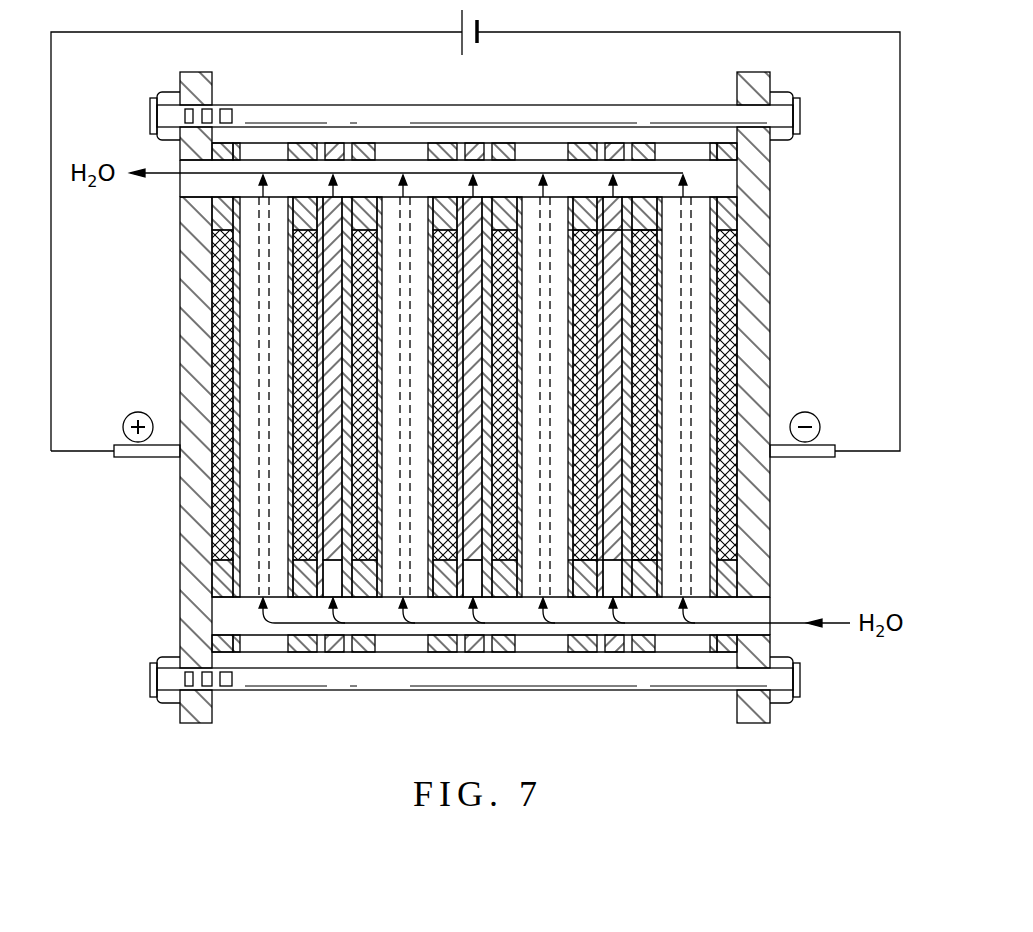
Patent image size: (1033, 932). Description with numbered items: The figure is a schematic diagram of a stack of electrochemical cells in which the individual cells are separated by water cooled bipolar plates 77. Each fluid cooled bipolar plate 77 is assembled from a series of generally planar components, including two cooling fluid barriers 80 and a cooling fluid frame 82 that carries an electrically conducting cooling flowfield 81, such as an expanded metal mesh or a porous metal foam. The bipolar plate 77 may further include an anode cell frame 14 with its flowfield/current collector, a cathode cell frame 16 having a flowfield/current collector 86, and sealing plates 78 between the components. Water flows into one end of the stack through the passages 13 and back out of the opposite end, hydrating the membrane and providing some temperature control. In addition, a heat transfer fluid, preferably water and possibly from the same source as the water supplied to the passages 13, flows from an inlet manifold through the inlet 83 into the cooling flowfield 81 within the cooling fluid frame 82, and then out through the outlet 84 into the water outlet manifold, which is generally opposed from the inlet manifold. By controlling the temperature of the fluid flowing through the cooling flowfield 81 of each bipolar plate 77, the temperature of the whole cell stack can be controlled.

The passages 13 is at (403, 580).
The anode cell frame 14 is at (585, 207).
The cathode cell frame 16 is at (657, 143).
The fluid cooled bipolar plate 77 is at (592, 183).
The sealing plates 78 is at (572, 653).
The cooling fluid barriers 80 is at (636, 293).
The cooling flowfield 81 is at (612, 345).
The cooling fluid frame 82 is at (615, 207).
The inlet 83 is at (607, 637).
The outlet 84 is at (645, 207).
The flowfield/current collector 86 is at (660, 254).